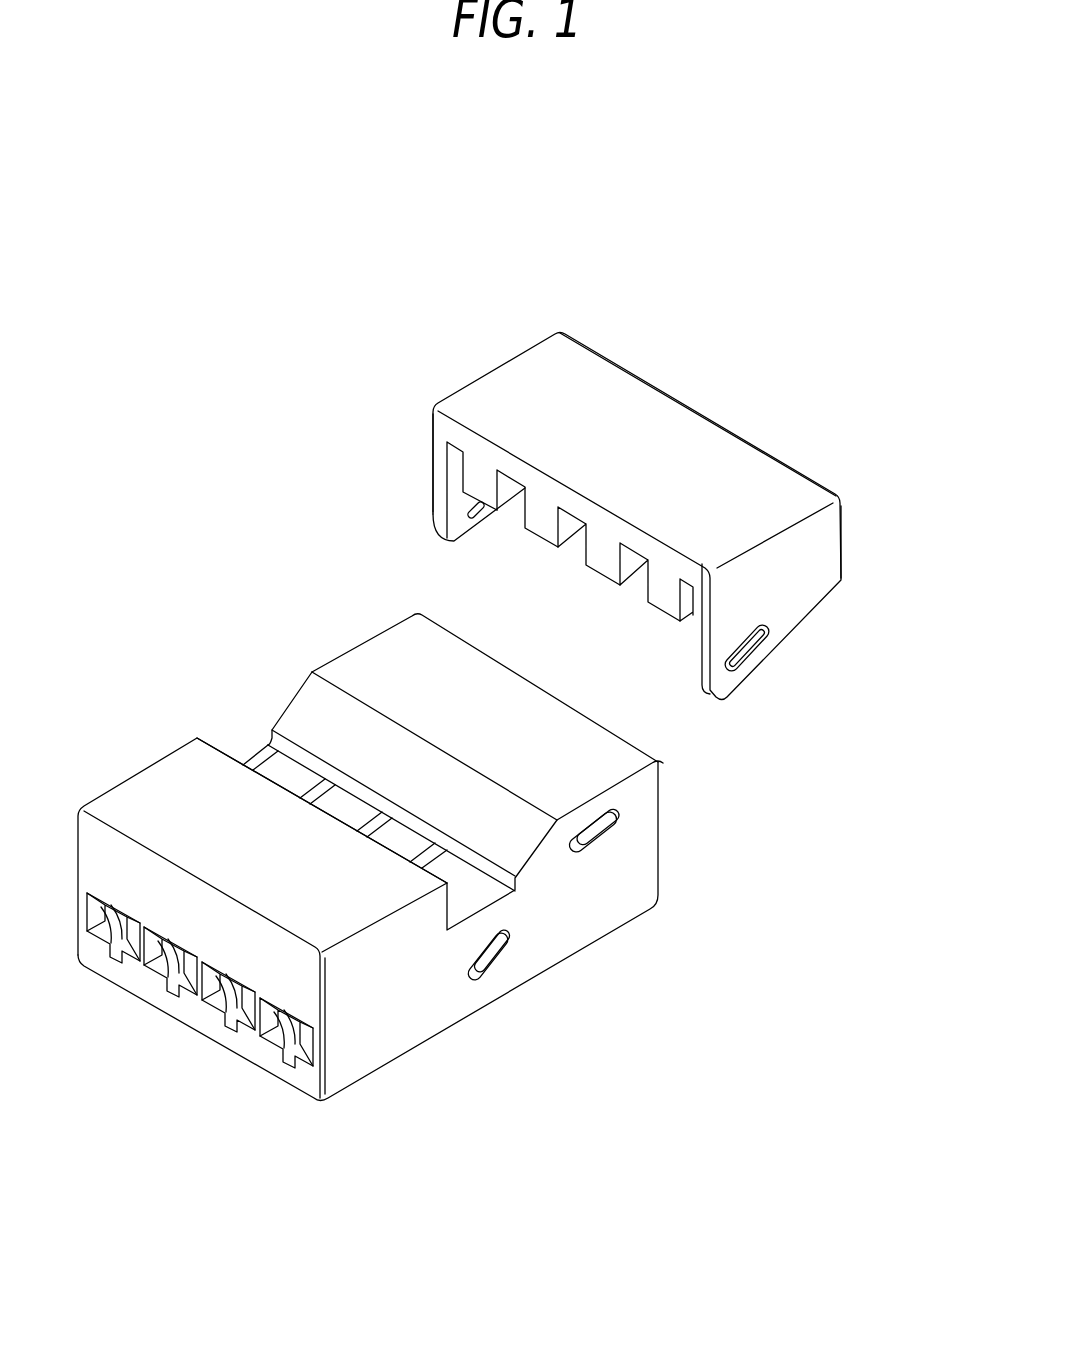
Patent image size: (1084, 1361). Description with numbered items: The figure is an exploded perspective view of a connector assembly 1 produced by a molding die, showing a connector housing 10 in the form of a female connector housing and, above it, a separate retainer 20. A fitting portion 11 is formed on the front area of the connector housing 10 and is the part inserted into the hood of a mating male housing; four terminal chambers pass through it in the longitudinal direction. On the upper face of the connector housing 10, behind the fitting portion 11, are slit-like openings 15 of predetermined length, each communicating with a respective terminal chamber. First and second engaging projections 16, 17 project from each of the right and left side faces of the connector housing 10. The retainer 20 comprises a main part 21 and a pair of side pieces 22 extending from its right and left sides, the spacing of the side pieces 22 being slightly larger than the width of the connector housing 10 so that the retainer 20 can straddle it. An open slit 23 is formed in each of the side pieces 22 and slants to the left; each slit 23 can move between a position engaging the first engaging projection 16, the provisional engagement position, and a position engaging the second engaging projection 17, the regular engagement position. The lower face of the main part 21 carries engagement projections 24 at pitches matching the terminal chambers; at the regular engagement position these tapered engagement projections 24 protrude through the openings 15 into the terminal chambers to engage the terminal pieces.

The connector assembly 1 is at (290, 625).
The connector housing 10 is at (469, 1083).
The fitting portion 11 is at (181, 808).
The slit-like openings 15 is at (290, 778).
The first engaging projection 16 is at (600, 829).
The second engaging projection 17 is at (493, 963).
The retainer 20 is at (565, 306).
The main part 21 is at (711, 447).
The side pieces 22 is at (431, 467).
The open slit 23 is at (745, 658).
The engagement projections 24 is at (481, 517).